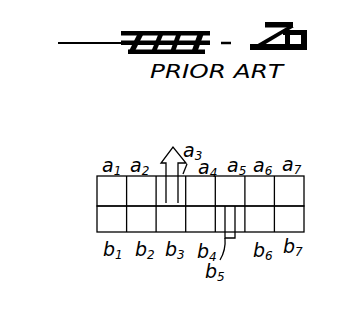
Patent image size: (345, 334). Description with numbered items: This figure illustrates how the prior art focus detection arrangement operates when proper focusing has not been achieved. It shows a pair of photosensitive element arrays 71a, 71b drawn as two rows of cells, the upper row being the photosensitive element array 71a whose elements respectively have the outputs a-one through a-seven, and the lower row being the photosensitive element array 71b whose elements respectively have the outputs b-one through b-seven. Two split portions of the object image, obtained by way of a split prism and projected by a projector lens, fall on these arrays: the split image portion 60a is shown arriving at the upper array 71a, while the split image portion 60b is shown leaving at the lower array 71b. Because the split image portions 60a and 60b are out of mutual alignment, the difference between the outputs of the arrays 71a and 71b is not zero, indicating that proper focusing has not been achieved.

The split image portion 60a is at (171, 152).
The split image portion 60b is at (232, 238).
The photosensitive element array 71a is at (97, 188).
The photosensitive element array 71b is at (97, 215).